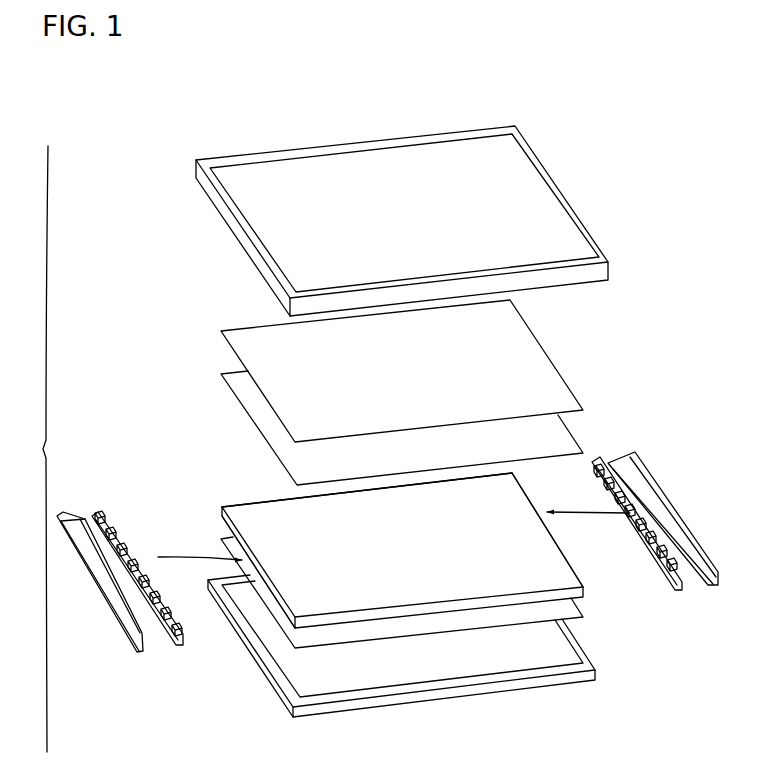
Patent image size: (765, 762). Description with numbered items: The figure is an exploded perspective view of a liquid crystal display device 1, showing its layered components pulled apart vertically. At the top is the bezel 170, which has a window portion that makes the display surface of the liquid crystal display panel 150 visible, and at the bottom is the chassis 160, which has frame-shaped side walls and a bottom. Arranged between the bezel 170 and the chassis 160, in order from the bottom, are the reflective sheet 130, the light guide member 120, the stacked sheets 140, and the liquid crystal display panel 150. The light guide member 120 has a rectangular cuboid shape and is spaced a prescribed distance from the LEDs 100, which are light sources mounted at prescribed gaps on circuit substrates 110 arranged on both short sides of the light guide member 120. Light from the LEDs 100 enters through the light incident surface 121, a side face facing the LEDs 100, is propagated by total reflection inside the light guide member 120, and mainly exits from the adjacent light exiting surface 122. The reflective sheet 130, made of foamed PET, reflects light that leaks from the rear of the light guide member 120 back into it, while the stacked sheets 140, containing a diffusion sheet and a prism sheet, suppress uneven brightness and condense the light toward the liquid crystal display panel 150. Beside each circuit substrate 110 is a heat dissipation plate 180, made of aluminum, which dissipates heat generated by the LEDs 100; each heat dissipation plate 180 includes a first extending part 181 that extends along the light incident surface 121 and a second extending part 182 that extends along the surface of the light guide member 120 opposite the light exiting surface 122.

The liquid crystal display device 1 is at (40, 449).
The LED 100 is at (105, 520).
The circuit substrate 110 is at (92, 519).
The light guide member 120 is at (257, 512).
The light incident surface 121 is at (227, 526).
The light exiting surface 122 is at (497, 513).
The reflective sheet 130 is at (221, 539).
The stacked sheets 140 is at (220, 389).
The liquid crystal display panel 150 is at (220, 347).
The chassis 160 is at (584, 656).
The bezel 170 is at (597, 247).
The heat dissipation plate 180 is at (117, 443).
The first extending part 181 is at (58, 514).
The second extending part 182 is at (68, 515).